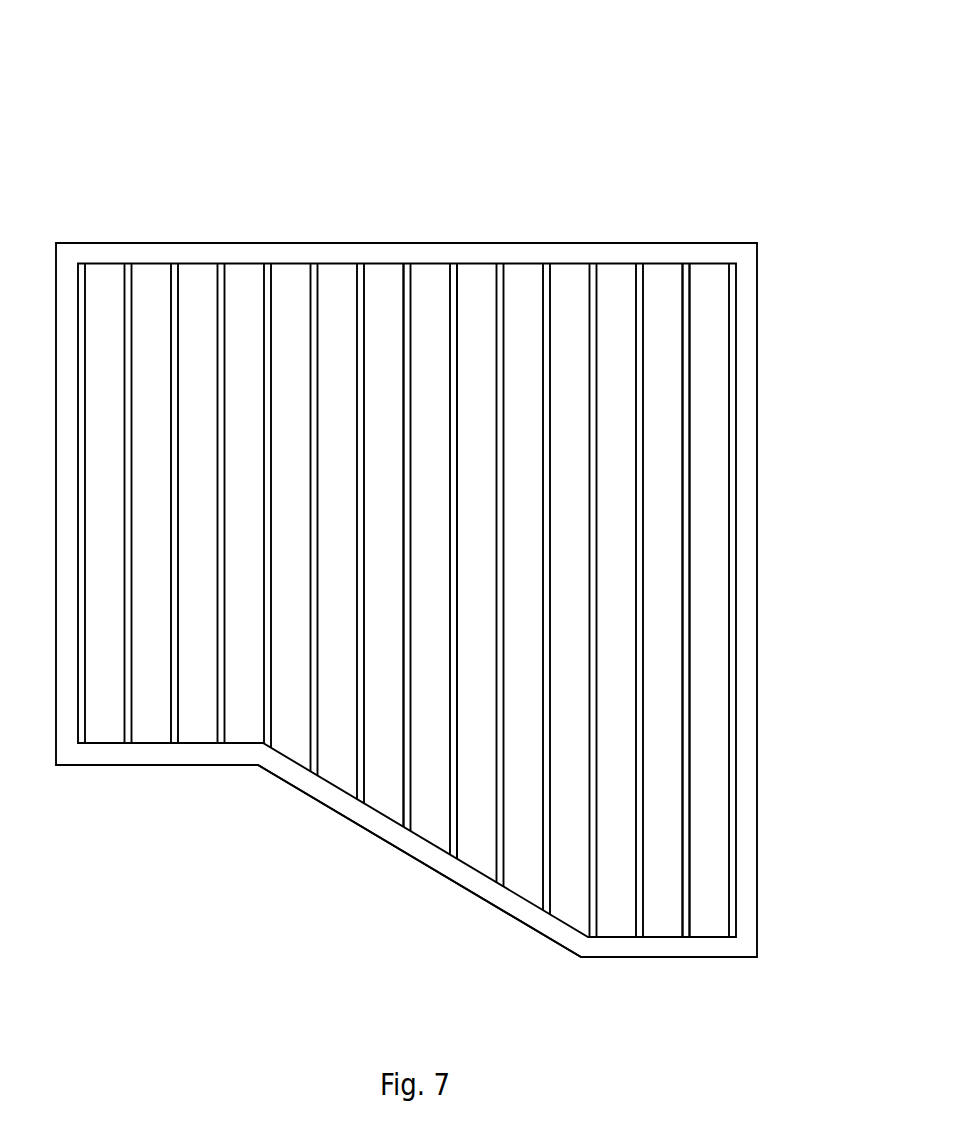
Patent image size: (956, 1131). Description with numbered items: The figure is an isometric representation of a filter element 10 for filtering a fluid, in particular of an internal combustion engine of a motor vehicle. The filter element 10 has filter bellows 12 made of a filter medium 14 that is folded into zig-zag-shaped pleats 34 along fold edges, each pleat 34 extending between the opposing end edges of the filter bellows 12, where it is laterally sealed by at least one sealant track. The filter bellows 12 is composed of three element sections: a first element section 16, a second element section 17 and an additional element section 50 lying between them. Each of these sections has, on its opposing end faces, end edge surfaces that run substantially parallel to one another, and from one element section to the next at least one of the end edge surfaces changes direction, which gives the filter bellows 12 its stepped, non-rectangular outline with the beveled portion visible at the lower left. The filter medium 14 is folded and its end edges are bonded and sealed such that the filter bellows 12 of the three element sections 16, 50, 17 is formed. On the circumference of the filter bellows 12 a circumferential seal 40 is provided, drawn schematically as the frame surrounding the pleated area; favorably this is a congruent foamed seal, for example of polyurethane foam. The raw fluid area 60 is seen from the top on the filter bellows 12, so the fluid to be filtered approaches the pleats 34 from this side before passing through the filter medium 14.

The filter element 10 is at (748, 151).
The filter bellows 12 is at (712, 461).
The filter medium 14 is at (430, 285).
The first element section 16 is at (675, 617).
The second element section 17 is at (160, 508).
The pleats 34 is at (573, 282).
The circumferential seal 40 is at (335, 802).
The additional element section 50 is at (442, 567).
The raw fluid area 60 is at (718, 358).